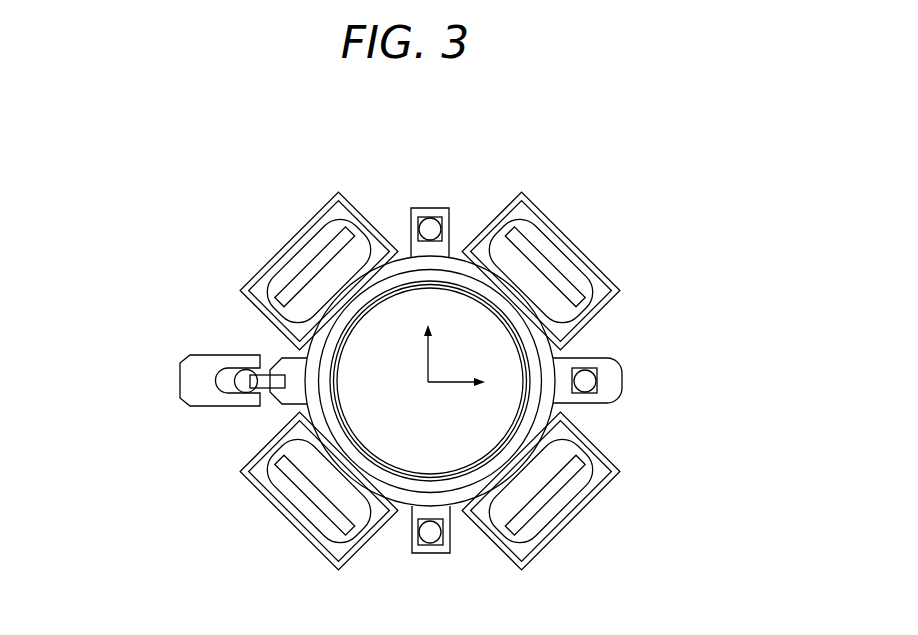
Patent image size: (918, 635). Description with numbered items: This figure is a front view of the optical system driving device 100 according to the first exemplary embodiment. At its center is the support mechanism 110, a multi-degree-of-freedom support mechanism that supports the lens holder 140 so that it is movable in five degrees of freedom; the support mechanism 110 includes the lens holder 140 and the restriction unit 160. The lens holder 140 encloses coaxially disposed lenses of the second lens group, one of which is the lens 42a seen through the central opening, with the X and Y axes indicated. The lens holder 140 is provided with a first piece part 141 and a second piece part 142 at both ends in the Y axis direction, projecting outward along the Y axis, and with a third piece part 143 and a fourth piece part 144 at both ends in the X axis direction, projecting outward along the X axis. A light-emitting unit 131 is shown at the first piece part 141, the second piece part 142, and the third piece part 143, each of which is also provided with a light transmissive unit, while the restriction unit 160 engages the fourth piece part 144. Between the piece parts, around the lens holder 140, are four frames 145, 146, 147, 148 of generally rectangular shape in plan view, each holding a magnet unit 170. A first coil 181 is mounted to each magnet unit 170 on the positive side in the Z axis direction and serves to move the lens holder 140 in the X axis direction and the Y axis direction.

The optical system driving device 100 is at (390, 106).
The support mechanism 110 is at (474, 134).
The light-emitting unit 131 is at (431, 220).
The lens holder 140 is at (408, 253).
The first piece part 141 is at (449, 222).
The second piece part 142 is at (412, 540).
The third piece part 143 is at (622, 373).
The fourth piece part 144 is at (280, 358).
The frame 145 is at (582, 248).
The frame 146 is at (618, 470).
The frame 147 is at (250, 473).
The frame 148 is at (297, 230).
The restriction unit 160 is at (181, 350).
The magnet unit 170 is at (257, 272).
The first coil 181 is at (345, 222).
The lens 42a is at (503, 358).